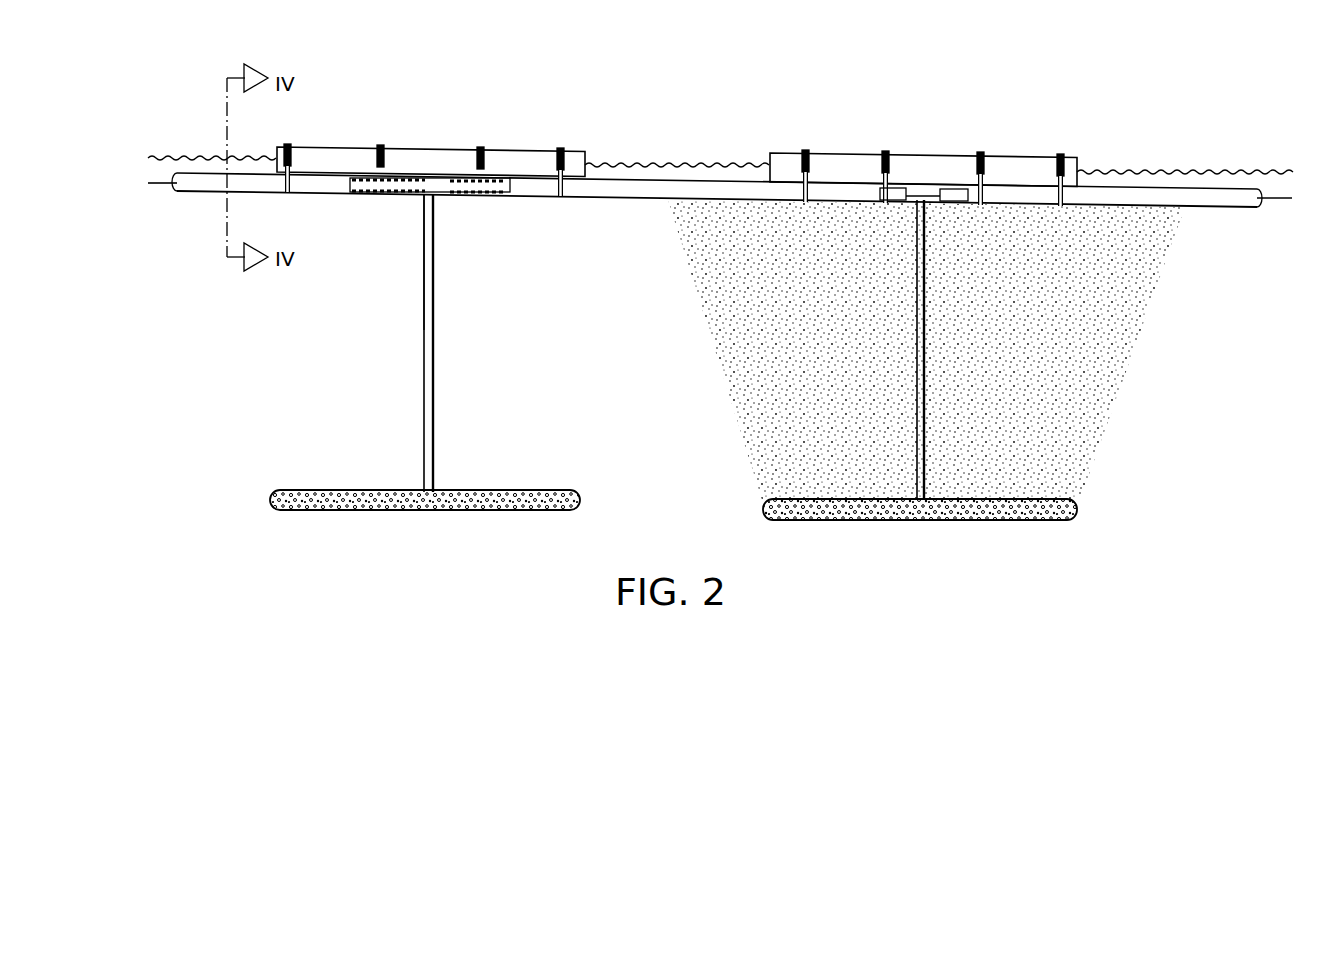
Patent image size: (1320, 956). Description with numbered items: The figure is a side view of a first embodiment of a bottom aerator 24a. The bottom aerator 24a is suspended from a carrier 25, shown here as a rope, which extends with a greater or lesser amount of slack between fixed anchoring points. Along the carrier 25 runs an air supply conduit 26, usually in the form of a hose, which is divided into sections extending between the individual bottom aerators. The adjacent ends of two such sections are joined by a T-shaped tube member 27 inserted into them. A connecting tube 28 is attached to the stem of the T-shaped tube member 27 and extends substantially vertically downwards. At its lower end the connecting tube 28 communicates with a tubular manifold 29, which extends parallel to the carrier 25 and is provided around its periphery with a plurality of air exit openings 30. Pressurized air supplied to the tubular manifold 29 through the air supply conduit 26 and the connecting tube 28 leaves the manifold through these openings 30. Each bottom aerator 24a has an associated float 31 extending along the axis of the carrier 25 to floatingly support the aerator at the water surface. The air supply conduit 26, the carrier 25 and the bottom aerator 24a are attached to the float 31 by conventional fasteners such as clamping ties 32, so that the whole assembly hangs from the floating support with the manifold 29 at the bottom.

The bottom aerator 24a is at (410, 331).
The carrier 25 is at (1268, 196).
The air supply conduit 26 is at (1093, 198).
The T-shaped tube member 27 is at (427, 188).
The connecting tube 28 is at (430, 297).
The tubular manifold 29 is at (478, 490).
The air exit openings 30 is at (984, 512).
The float 31 is at (835, 168).
The clamping ties 32 is at (778, 180).